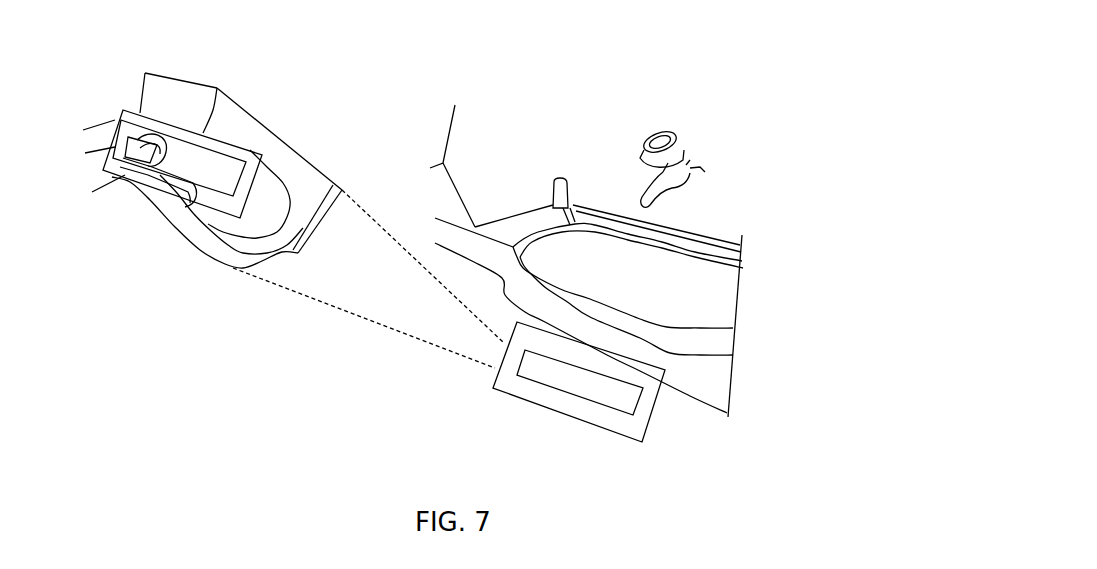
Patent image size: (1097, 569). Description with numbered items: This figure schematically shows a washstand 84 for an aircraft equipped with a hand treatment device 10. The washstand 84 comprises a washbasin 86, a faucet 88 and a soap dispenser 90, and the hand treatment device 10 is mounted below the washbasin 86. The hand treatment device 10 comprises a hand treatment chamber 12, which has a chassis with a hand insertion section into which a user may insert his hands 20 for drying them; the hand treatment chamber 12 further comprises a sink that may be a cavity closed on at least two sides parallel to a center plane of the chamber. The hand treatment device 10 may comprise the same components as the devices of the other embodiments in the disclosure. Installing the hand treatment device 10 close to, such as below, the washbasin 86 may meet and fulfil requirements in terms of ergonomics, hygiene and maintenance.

The hand treatment device 10 is at (318, 160).
The hand treatment chamber 12 is at (140, 215).
The hands 20 is at (93, 178).
The washstand 84 is at (676, 88).
The washbasin 86 is at (680, 278).
The faucet 88 is at (688, 157).
The soap dispenser 90 is at (556, 178).